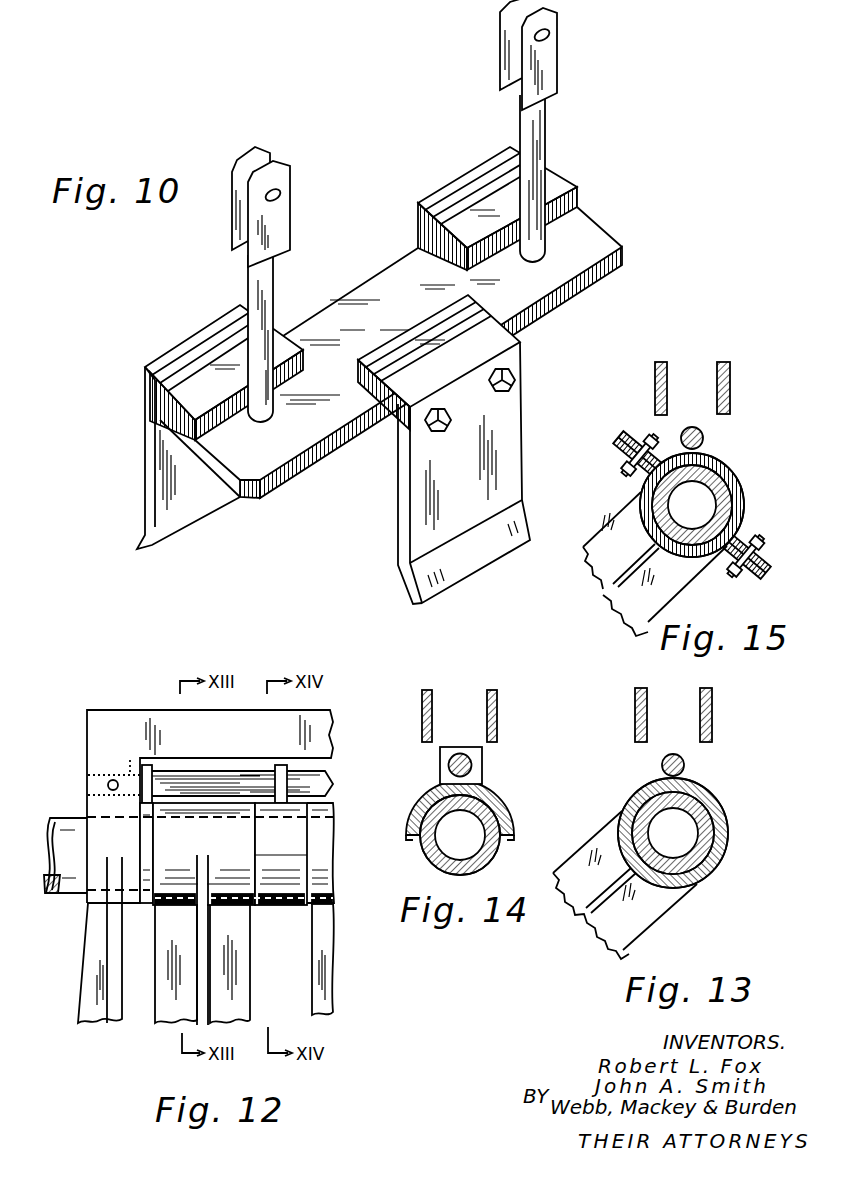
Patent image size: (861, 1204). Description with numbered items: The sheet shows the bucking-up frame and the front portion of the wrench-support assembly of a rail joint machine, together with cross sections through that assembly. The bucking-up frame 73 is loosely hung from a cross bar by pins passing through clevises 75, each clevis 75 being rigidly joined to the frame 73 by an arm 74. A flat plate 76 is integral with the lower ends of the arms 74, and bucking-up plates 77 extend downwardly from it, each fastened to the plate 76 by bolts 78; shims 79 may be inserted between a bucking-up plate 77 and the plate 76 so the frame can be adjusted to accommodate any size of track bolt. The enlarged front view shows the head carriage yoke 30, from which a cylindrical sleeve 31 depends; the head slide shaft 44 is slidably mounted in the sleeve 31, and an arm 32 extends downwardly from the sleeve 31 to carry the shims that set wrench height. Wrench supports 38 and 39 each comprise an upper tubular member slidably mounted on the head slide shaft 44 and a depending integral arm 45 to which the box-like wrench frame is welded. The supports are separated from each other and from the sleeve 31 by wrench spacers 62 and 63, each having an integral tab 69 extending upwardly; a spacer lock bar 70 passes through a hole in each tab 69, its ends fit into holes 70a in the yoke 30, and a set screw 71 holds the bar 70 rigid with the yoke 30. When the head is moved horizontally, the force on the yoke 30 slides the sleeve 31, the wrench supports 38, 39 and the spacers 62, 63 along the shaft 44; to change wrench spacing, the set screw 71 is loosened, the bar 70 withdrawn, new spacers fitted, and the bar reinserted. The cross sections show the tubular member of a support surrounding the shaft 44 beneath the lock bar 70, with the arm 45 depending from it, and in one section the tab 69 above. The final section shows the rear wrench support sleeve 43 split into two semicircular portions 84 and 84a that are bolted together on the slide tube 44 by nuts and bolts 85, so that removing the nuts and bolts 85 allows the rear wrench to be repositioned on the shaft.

In FIG. 15, the head carriage yoke 30 is at (731, 399).
In FIG. 14, the head carriage yoke 30 is at (423, 690).
In FIG. 13, the head carriage yoke 30 is at (641, 688).
In FIG. 12, the head carriage yoke 30 is at (116, 710).
In FIG. 12, the cylindrical sleeve 31 is at (88, 902).
In FIG. 12, the arm 32 is at (120, 963).
In FIG. 13, the wrench support 38 is at (710, 794).
In FIG. 12, the wrench support 38 is at (254, 841).
In FIG. 12, the wrench support 39 is at (332, 860).
In FIG. 15, the rear wrench support sleeve 43 is at (598, 569).
In FIG. 15, the head slide shaft 44 is at (736, 490).
In FIG. 14, the head slide shaft 44 is at (498, 850).
In FIG. 13, the head slide shaft 44 is at (705, 838).
In FIG. 12, the head slide shaft 44 is at (50, 838).
In FIG. 15, the depending integral arm 45 is at (684, 590).
In FIG. 13, the depending integral arm 45 is at (600, 935).
In FIG. 12, the depending integral arm 45 is at (250, 968).
In FIG. 12, the wrench spacer 62 is at (147, 837).
In FIG. 14, the wrench spacer 63 is at (511, 818).
In FIG. 12, the wrench spacer 63 is at (298, 832).
In FIG. 14, the tab 69 is at (483, 778).
In FIG. 12, the tab 69 is at (283, 764).
In FIG. 15, the spacer lock bar 70 is at (696, 427).
In FIG. 14, the spacer lock bar 70 is at (449, 765).
In FIG. 13, the spacer lock bar 70 is at (662, 765).
In FIG. 12, the spacer lock bar 70 is at (333, 779).
In FIG. 12, the hole 70a is at (114, 768).
In FIG. 12, the set screw 71 is at (108, 783).
In FIG. 10, the bucking-up frame 73 is at (569, 178).
In FIG. 10, the arm 74 is at (275, 293).
In FIG. 10, the clevis 75 is at (290, 205).
In FIG. 10, the flat plate 76 is at (613, 250).
In FIG. 10, the bucking-up plate 77 is at (147, 498).
In FIG. 10, the bolt 78 is at (513, 385).
In FIG. 10, the shim 79 is at (496, 337).
In FIG. 15, the semicircular portion 84 is at (677, 522).
In FIG. 15, the semicircular portion 84a is at (711, 458).
In FIG. 15, the nuts and bolts 85 is at (688, 480).